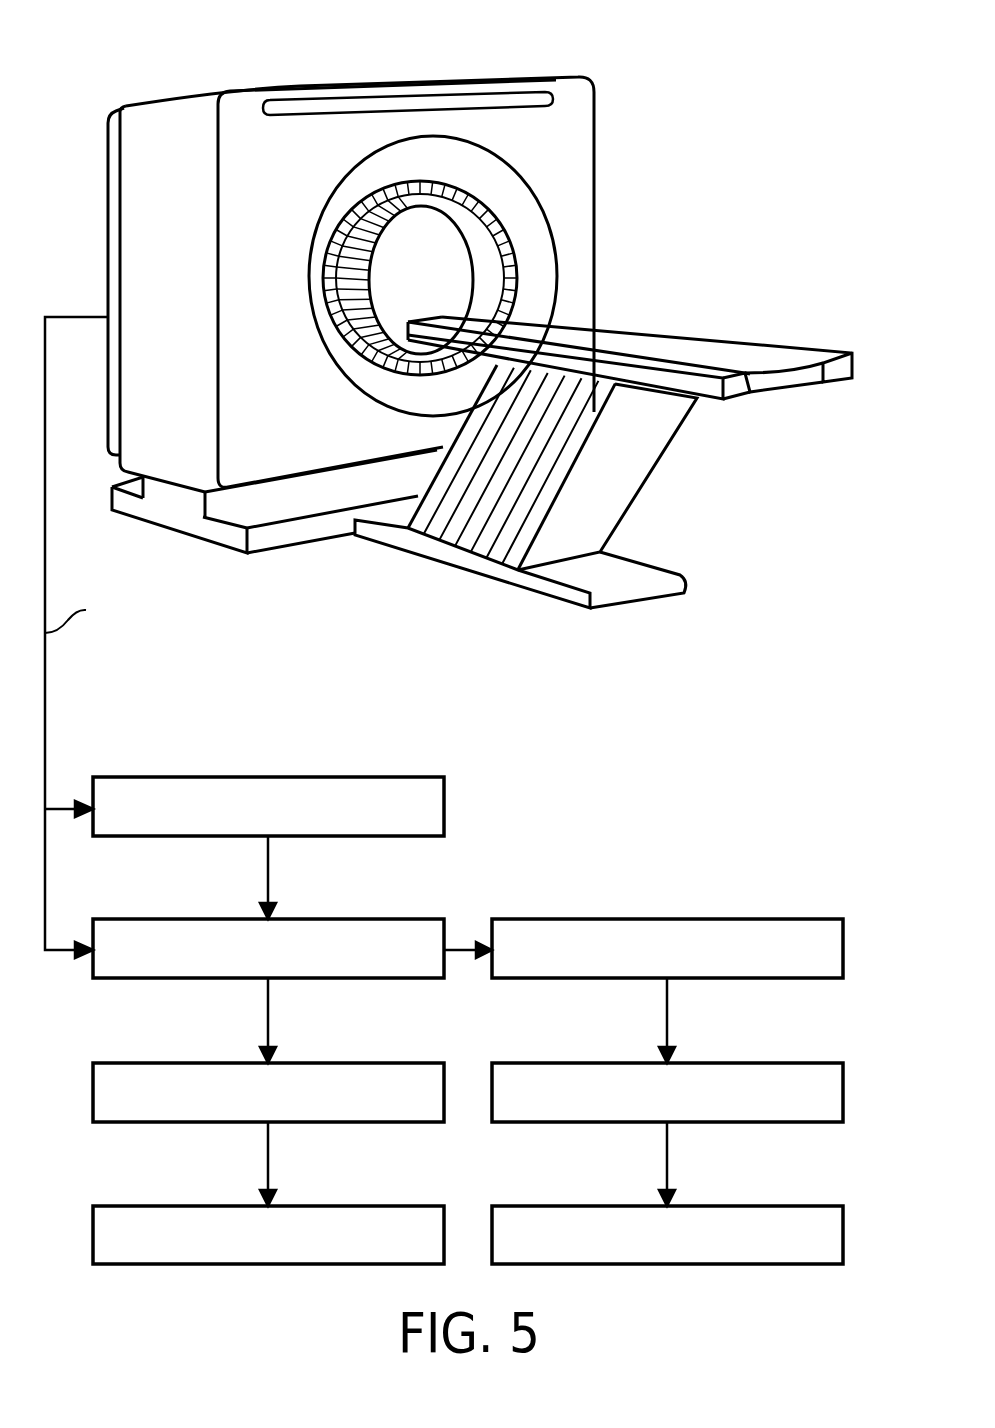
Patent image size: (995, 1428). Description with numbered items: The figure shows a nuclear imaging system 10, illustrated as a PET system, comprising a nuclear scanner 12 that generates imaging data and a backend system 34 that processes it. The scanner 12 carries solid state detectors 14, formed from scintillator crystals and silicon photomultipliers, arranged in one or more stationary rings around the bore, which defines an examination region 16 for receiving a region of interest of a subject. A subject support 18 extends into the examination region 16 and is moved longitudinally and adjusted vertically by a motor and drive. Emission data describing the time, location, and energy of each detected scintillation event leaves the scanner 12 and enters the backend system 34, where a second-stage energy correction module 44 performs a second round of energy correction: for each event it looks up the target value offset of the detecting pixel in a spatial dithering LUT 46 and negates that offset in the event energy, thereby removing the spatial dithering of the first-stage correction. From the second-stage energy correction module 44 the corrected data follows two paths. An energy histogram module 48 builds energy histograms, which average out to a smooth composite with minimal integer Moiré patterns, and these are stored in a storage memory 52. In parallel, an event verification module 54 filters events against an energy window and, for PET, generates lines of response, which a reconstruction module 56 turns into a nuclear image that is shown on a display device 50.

The nuclear imaging system 10 is at (780, 78).
The nuclear scanner 12 is at (178, 95).
The solid state detectors 14 is at (502, 233).
The examination region 16 is at (421, 280).
The subject support 18 is at (777, 344).
The backend system 34 is at (620, 803).
The second-stage energy correction module 44 is at (128, 919).
The spatial dithering LUT 46 is at (128, 776).
The energy histogram module 48 is at (128, 1063).
The display device 50 is at (808, 1206).
The storage memory 52 is at (128, 1206).
The event verification module 54 is at (808, 919).
The reconstruction module 56 is at (808, 1063).